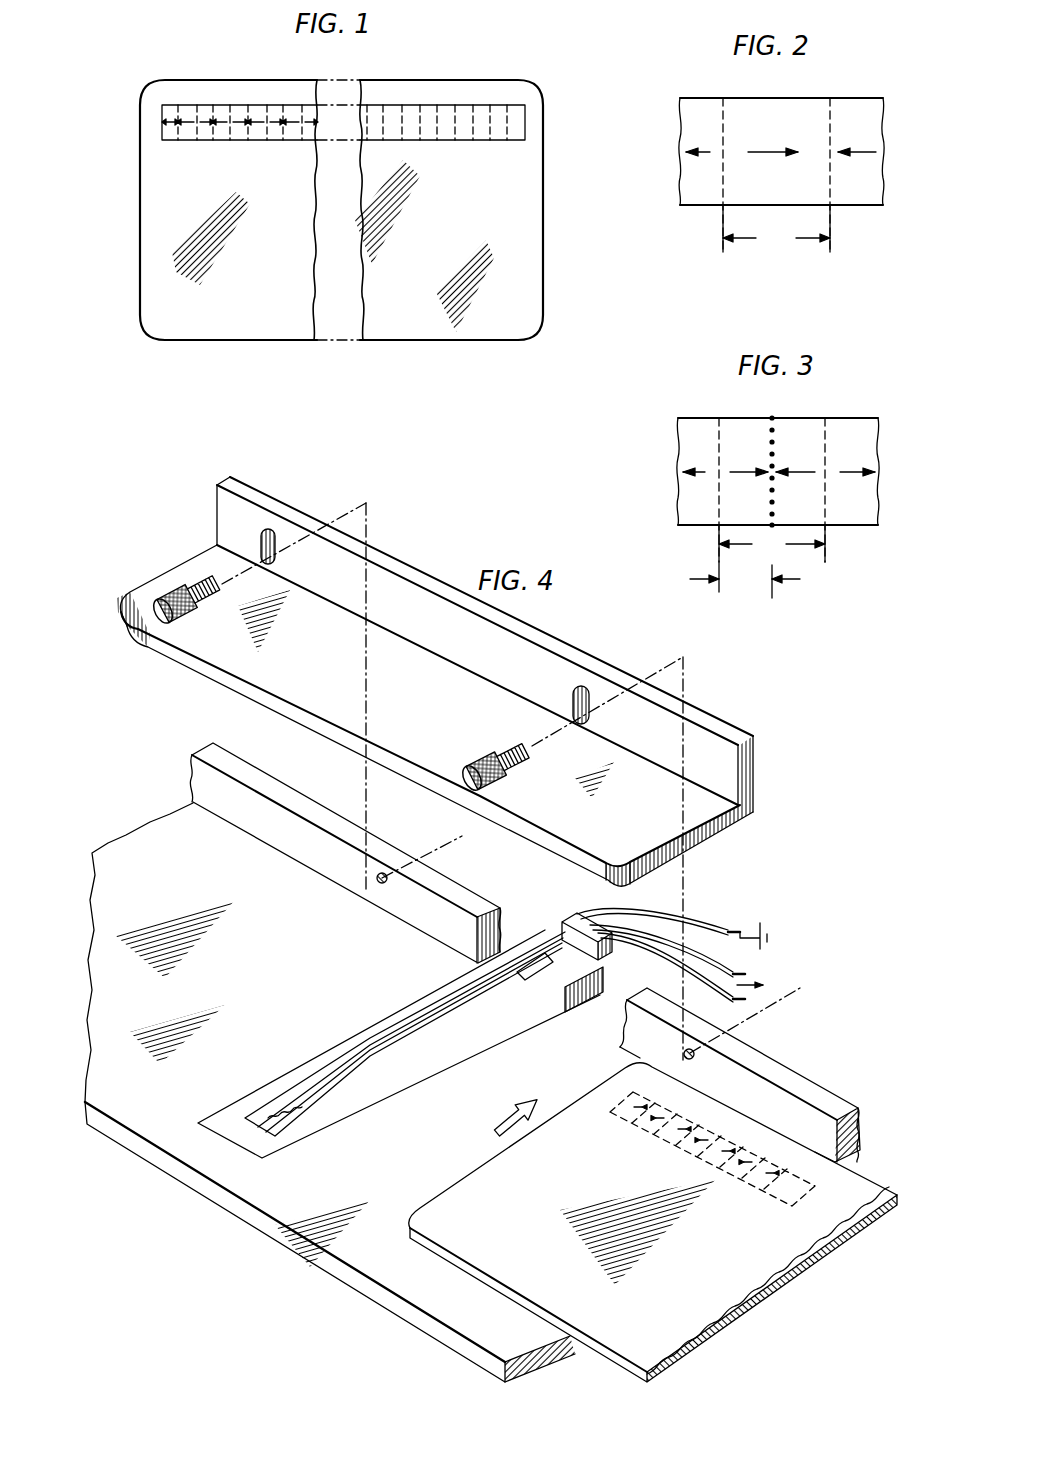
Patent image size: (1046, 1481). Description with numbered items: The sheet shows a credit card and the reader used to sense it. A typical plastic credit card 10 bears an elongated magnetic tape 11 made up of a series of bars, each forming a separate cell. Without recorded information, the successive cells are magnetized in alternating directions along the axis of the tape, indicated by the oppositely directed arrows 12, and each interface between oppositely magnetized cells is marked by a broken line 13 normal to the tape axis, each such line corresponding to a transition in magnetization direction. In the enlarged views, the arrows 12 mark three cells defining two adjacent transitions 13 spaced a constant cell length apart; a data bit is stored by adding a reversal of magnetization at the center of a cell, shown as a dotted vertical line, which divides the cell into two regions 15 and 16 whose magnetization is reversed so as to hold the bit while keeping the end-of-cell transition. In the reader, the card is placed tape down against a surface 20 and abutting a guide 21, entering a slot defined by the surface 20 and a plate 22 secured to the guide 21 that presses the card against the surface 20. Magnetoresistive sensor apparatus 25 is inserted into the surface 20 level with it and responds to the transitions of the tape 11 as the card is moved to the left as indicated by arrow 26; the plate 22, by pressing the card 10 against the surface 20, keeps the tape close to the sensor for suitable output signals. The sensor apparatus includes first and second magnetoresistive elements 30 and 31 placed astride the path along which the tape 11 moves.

In FIG. 1, the credit card 10 is at (528, 236).
In FIG. 4, the credit card 10 is at (458, 1183).
In FIG. 1, the magnetic tape 11 is at (523, 125).
In FIG. 2, the magnetic tape 11 is at (813, 98).
In FIG. 4, the magnetic tape 11 is at (616, 1104).
In FIG. 1, the arrows 12 is at (208, 122).
In FIG. 2, the arrows 12 is at (763, 150).
In FIG. 1, the broken line 13 is at (282, 108).
In FIG. 2, the broken line 13 is at (722, 175).
In FIG. 3, the broken line 13 is at (718, 440).
In FIG. 2, the region 15 is at (872, 173).
In FIG. 3, the region 15 is at (872, 495).
In FIG. 3, the region 16 is at (805, 430).
In FIG. 4, the surface 20 is at (320, 1020).
In FIG. 4, the guide 21 is at (467, 898).
In FIG. 4, the plate 22 is at (754, 775).
In FIG. 4, the magnetoresistive sensor apparatus 25 is at (268, 1148).
In FIG. 4, the arrow 26 is at (496, 1117).
In FIG. 4, the first magnetoresistive element 30 is at (340, 1082).
In FIG. 4, the second magnetoresistive element 31 is at (368, 1062).